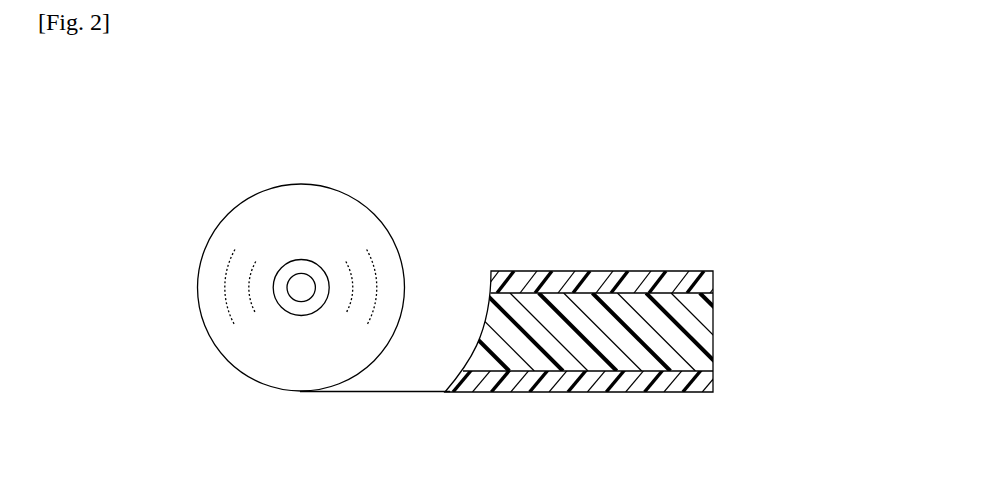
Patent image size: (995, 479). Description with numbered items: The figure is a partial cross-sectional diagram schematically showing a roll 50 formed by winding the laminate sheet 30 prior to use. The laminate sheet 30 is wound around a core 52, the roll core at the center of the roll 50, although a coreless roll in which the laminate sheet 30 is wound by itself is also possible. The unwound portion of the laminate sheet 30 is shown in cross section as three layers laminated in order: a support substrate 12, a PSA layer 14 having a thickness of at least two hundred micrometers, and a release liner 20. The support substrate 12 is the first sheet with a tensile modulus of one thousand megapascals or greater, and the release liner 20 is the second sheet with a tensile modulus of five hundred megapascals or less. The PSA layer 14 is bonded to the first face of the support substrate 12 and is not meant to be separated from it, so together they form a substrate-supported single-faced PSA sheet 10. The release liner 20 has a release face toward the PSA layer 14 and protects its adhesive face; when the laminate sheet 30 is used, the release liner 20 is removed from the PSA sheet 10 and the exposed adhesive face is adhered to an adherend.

The PSA sheet 10 is at (645, 316).
The support substrate 12 is at (714, 277).
The PSA layer 14 is at (714, 312).
The release liner 20 is at (714, 377).
The laminate sheet 30 is at (645, 366).
The roll 50 is at (310, 294).
The core 52 is at (300, 316).